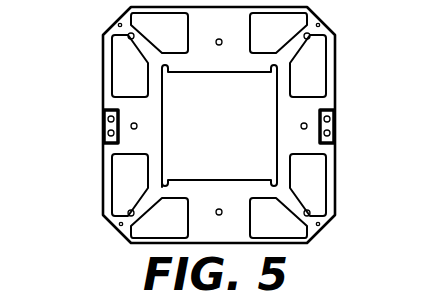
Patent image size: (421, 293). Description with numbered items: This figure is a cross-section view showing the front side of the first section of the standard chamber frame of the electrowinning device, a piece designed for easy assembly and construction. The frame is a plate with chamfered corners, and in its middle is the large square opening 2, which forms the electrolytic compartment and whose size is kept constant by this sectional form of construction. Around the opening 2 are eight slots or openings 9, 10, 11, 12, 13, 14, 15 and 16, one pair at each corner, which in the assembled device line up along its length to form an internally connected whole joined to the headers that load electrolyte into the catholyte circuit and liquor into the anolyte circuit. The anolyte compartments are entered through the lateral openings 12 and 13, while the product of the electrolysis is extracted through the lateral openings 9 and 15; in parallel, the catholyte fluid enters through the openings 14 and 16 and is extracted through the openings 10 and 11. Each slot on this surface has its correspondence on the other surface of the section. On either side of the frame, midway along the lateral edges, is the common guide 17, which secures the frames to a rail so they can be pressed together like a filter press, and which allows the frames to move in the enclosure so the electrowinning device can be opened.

The opening 2 is at (182, 175).
The lateral opening 9 is at (131, 67).
The opening 10 is at (163, 36).
The opening 11 is at (275, 36).
The lateral opening 12 is at (307, 67).
The lateral opening 13 is at (308, 186).
The opening 14 is at (275, 216).
The lateral opening 15 is at (130, 186).
The opening 16 is at (163, 216).
The common guide 17 is at (103, 120).